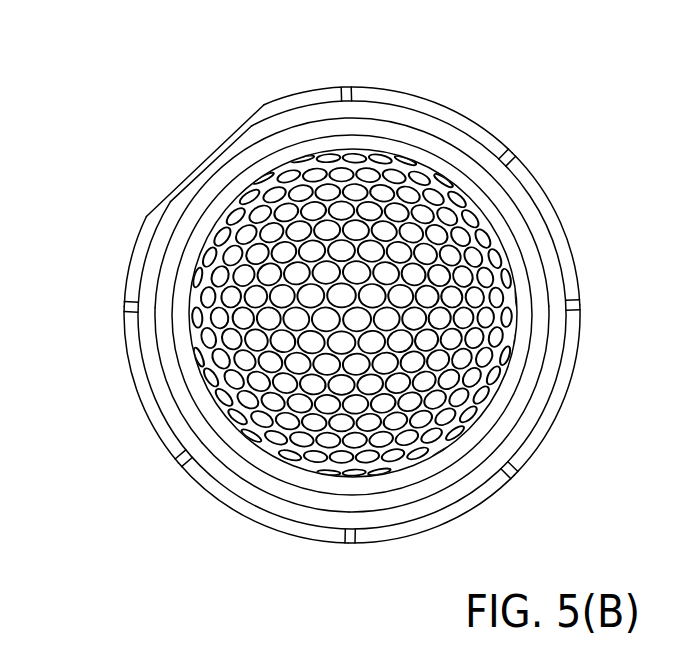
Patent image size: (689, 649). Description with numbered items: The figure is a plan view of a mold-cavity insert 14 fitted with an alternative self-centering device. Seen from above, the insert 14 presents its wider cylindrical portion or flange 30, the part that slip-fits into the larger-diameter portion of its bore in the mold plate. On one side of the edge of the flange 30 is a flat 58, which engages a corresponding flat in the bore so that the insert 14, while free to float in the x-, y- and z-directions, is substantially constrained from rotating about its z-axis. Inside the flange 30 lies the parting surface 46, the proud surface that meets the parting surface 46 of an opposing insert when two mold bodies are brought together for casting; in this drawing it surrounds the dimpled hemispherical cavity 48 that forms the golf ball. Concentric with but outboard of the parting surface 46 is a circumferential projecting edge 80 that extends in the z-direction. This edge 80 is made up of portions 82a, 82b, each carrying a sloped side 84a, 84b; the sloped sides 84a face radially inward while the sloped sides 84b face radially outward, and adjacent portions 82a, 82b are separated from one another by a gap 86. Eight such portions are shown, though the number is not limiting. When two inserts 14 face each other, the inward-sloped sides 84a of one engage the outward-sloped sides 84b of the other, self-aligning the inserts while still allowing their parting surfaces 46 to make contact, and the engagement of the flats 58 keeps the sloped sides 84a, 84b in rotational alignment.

The mold-cavity insert 14 is at (590, 80).
The flange 30 is at (541, 437).
The parting surface 46 is at (500, 221).
The dimples 48 is at (433, 168).
The flat 58 is at (243, 122).
The circumferential projecting edge 80 is at (458, 98).
The portion of projecting edge 82a is at (468, 110).
The portion of projecting edge 82b is at (291, 90).
The inward-facing sloped side 84a is at (417, 102).
The outward-facing sloped side 84b is at (308, 95).
The gap 86 is at (350, 88).